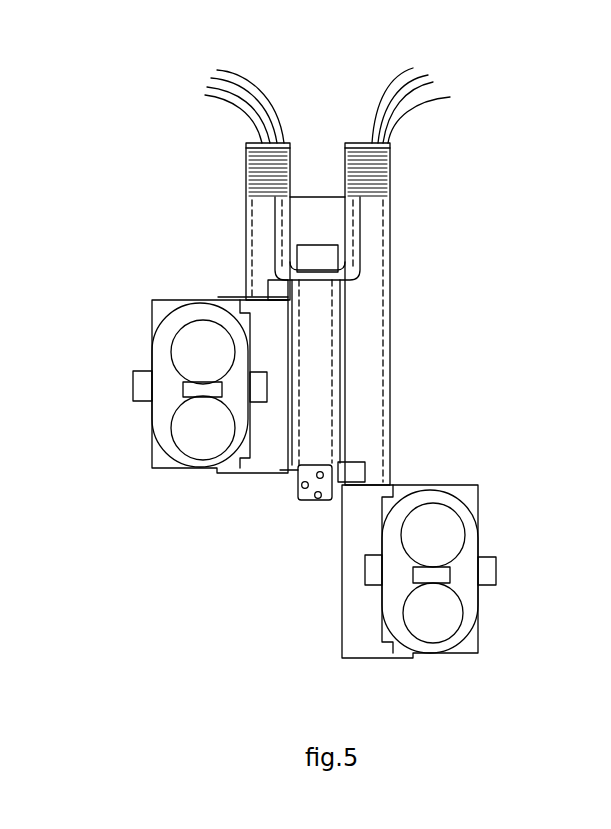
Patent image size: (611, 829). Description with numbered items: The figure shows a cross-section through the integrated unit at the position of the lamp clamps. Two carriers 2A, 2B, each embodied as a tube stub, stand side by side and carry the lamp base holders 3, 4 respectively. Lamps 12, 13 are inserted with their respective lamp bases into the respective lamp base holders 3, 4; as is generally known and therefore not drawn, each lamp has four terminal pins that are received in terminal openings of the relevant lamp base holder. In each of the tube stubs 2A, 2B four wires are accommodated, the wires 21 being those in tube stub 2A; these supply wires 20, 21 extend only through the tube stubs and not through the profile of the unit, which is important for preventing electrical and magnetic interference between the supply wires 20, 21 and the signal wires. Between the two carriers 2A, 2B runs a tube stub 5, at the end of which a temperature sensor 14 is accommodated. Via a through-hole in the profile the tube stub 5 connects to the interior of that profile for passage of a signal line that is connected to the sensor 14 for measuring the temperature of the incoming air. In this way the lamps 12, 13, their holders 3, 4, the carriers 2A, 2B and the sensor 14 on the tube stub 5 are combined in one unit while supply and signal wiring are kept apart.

The carrier 2A is at (262, 223).
The carrier 2B is at (375, 227).
The lamp base holder 3 is at (472, 495).
The lamp base holder 4 is at (165, 310).
The tube stub 5 is at (318, 327).
The lamp 12 is at (437, 622).
The lamp 13 is at (188, 427).
The temperature sensor 14 is at (320, 485).
The supply wires 20 is at (440, 82).
The wires 21 is at (210, 80).